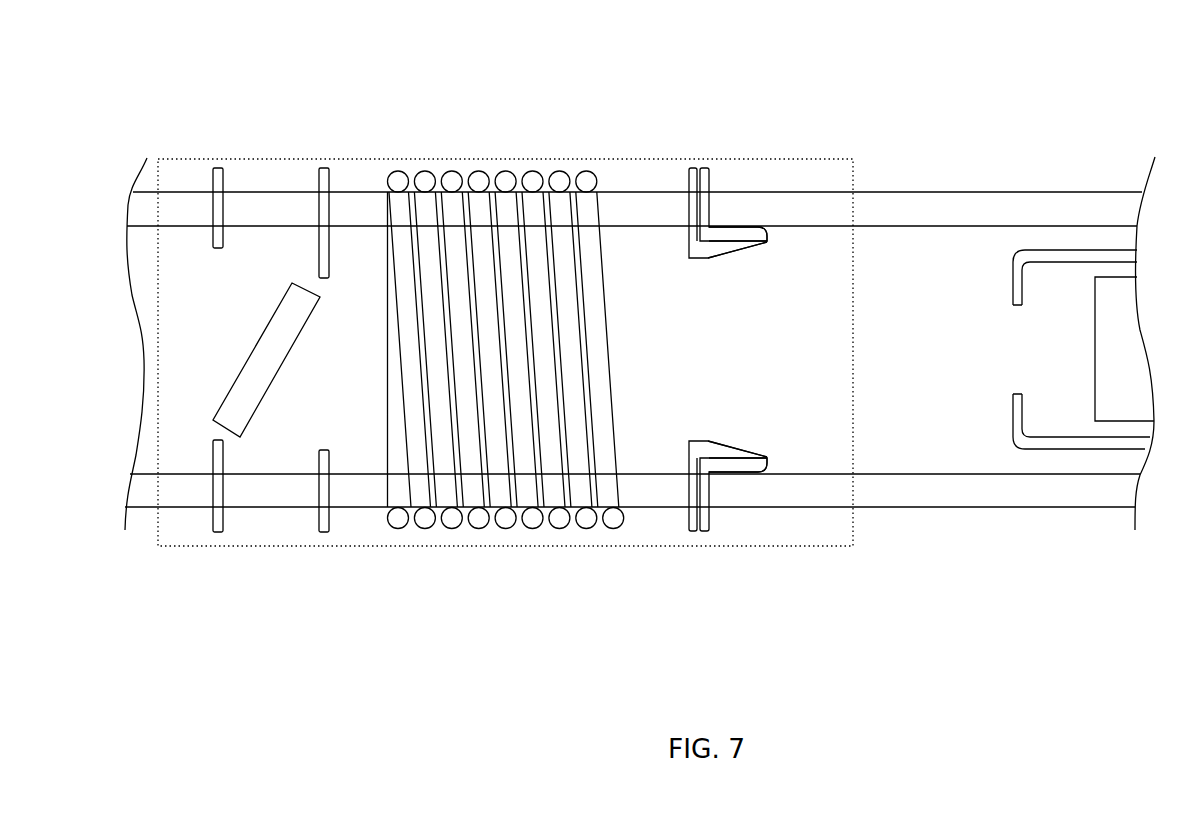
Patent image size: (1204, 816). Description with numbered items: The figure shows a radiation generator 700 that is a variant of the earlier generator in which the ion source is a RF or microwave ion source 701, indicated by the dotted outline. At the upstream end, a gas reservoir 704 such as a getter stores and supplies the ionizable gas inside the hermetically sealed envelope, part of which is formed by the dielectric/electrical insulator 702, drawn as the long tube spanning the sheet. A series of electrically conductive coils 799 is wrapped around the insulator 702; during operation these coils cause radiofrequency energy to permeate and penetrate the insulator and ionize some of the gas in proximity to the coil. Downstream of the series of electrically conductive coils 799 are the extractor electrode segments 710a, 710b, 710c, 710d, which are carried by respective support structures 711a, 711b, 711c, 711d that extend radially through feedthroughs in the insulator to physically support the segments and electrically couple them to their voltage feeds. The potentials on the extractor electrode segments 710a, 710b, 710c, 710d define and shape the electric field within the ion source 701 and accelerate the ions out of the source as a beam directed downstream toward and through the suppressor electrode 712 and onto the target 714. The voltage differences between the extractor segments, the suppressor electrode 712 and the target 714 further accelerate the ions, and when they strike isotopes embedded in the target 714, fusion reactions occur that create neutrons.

The radiation generator 700 is at (128, 62).
The RF or microwave ion source 701 is at (212, 157).
The dielectric/electrical insulator 702 is at (130, 192).
The gas reservoir 704 is at (222, 402).
The series of electrically conductive coils 799 is at (533, 172).
The extractor electrode segment 710a is at (689, 247).
The extractor electrode segment 710b is at (740, 228).
The extractor electrode segment 710c is at (689, 452).
The extractor electrode segment 710d is at (755, 475).
The support structure 711a is at (689, 205).
The support structure 711b is at (708, 200).
The support structure 711c is at (689, 495).
The support structure 711d is at (708, 495).
The suppressor electrode 712 is at (1022, 250).
The target 714 is at (1115, 278).